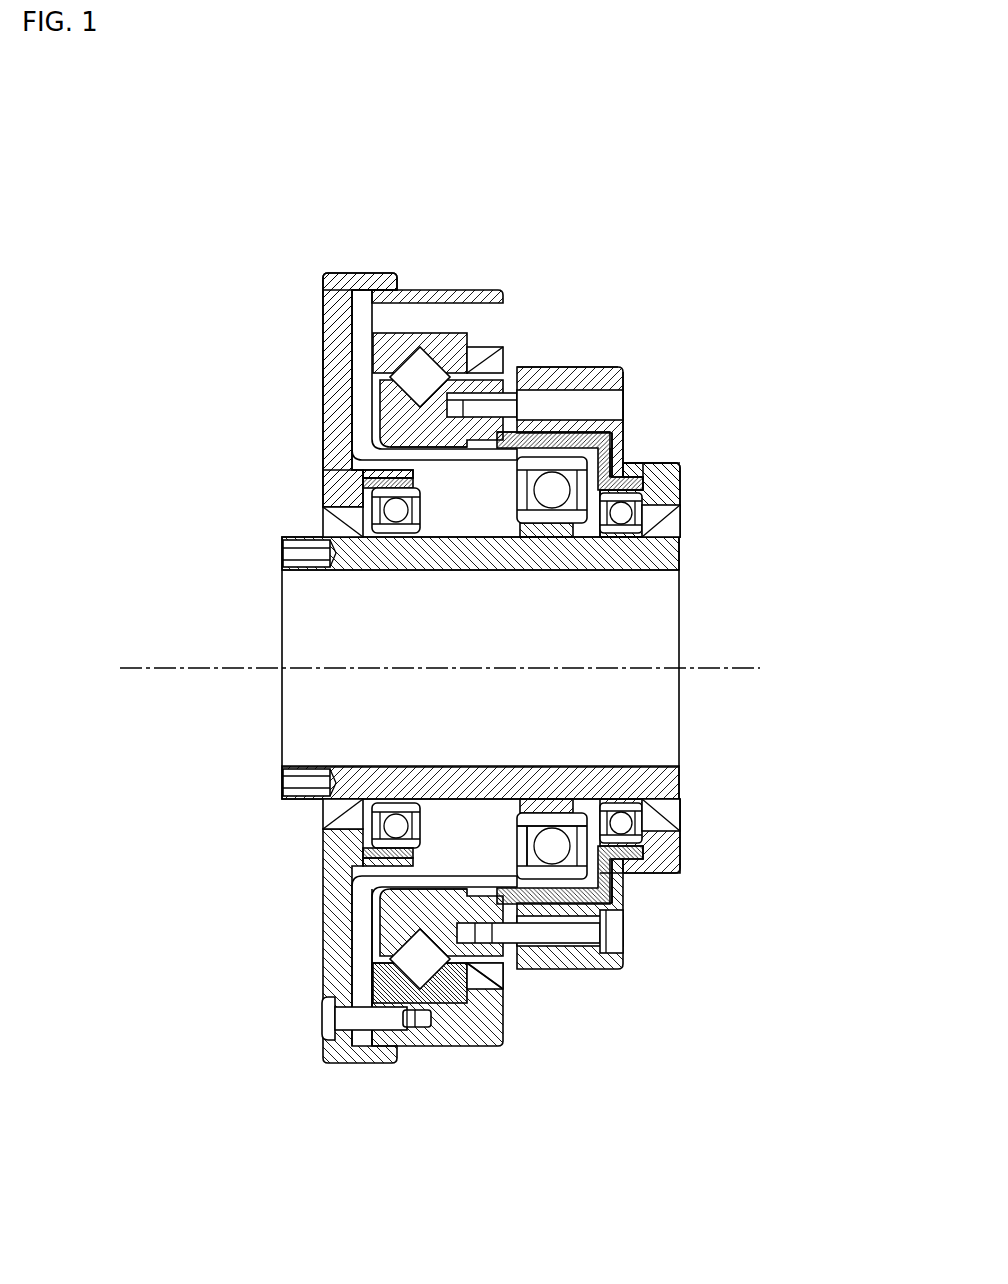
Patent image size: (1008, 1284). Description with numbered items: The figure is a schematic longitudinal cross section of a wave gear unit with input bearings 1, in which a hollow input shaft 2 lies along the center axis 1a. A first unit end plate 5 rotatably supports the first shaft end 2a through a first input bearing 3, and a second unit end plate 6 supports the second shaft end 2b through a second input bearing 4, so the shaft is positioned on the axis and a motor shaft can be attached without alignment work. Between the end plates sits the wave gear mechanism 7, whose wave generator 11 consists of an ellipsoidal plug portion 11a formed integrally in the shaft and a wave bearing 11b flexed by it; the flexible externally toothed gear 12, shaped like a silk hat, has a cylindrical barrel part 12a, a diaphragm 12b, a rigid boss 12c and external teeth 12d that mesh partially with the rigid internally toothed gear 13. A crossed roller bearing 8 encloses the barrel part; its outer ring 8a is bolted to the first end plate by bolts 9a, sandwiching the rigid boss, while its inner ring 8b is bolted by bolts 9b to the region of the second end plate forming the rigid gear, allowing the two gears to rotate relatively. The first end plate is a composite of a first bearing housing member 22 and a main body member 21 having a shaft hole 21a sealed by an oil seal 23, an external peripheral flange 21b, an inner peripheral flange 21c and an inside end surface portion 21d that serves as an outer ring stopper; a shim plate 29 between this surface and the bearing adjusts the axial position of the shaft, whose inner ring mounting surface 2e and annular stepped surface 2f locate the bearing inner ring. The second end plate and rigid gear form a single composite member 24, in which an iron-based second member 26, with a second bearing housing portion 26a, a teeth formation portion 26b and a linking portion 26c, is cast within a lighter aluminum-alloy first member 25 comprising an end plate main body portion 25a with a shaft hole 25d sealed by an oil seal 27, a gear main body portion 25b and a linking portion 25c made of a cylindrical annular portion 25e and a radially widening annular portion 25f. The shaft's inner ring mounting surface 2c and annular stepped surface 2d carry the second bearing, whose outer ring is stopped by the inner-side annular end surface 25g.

The wave gear unit with input bearings 1 is at (682, 205).
The center axis 1a is at (130, 672).
The input shaft 2 is at (265, 612).
The first shaft end 2a is at (376, 558).
The second shaft end 2b is at (626, 565).
The inner ring mounting surface 2c is at (660, 770).
The annular stepped surface 2d is at (633, 770).
The inner ring mounting surface 2e is at (342, 775).
The annular stepped surface 2f is at (406, 800).
The first input bearing 3 is at (360, 493).
The second input bearing 4 is at (683, 493).
The first unit end plate 5 is at (310, 378).
The second unit end plate 6 is at (688, 851).
The wave gear mechanism 7 is at (490, 445).
The crossed roller bearing 8 is at (509, 338).
The outer ring 8a is at (446, 290).
The inner ring 8b is at (448, 434).
The bolts 9a is at (357, 1022).
The bolts 9b is at (628, 938).
The wave generator 11 is at (565, 803).
The plug portion 11a is at (535, 812).
The wave bearing 11b is at (516, 832).
The flexible externally toothed gear 12 is at (472, 886).
The cylindrical barrel part 12a is at (446, 882).
The diaphragm 12b is at (370, 915).
The rigid boss 12c is at (362, 988).
The external teeth 12d is at (604, 953).
The rigid internally toothed gear 13 is at (624, 925).
The first unit end plate main body member 21 is at (312, 352).
The shaft hole 21a is at (340, 522).
The external peripheral flange 21b is at (354, 272).
The inner peripheral flange 21c is at (362, 442).
The inside end surface portion 21d is at (365, 858).
The first bearing housing member 22 is at (357, 476).
The oil seal 23 is at (325, 528).
The composite member 24 is at (774, 884).
The first member 25 is at (638, 368).
The end plate main body portion 25a is at (683, 462).
The gear main body portion 25b is at (598, 365).
The linking portion 25c is at (735, 338).
The shaft hole 25d is at (665, 512).
The annular portion 25e is at (647, 463).
The annular portion 25f is at (628, 432).
The inner-side annular end surface 25g is at (638, 847).
The second member 26 is at (655, 487).
The second bearing housing portion 26a is at (600, 492).
The teeth formation portion 26b is at (497, 458).
The linking portion 26c is at (545, 525).
The oil seal 27 is at (660, 533).
The shim plate 29 is at (352, 836).